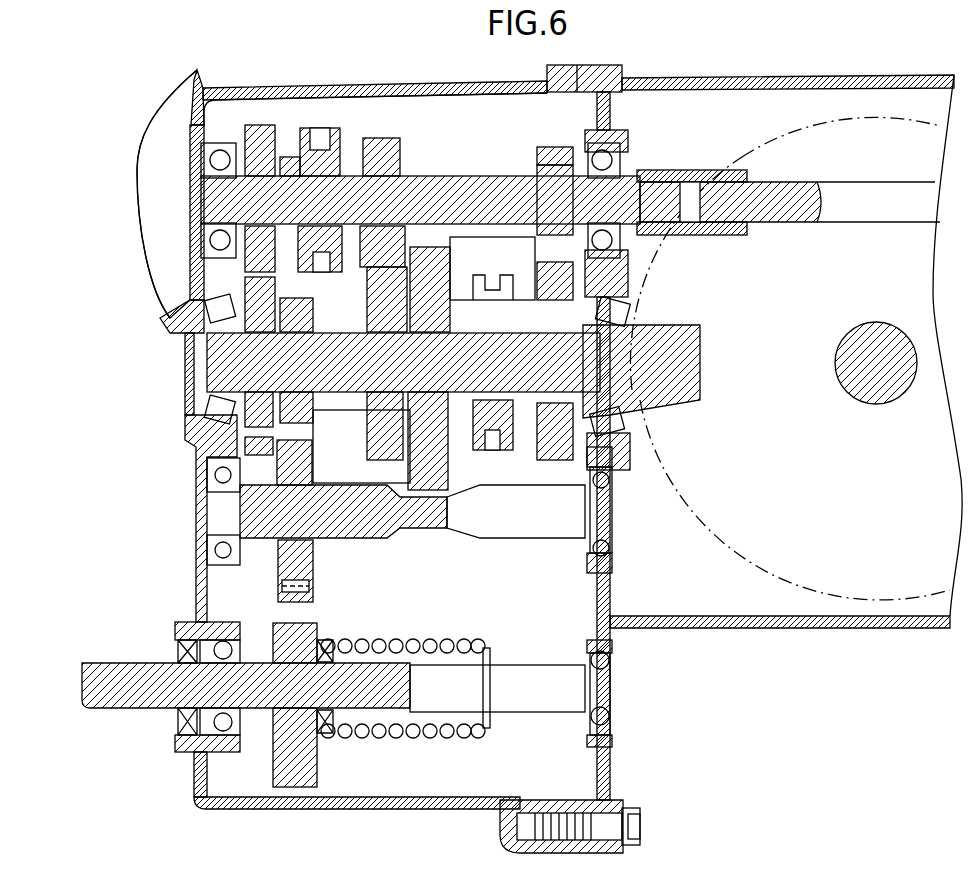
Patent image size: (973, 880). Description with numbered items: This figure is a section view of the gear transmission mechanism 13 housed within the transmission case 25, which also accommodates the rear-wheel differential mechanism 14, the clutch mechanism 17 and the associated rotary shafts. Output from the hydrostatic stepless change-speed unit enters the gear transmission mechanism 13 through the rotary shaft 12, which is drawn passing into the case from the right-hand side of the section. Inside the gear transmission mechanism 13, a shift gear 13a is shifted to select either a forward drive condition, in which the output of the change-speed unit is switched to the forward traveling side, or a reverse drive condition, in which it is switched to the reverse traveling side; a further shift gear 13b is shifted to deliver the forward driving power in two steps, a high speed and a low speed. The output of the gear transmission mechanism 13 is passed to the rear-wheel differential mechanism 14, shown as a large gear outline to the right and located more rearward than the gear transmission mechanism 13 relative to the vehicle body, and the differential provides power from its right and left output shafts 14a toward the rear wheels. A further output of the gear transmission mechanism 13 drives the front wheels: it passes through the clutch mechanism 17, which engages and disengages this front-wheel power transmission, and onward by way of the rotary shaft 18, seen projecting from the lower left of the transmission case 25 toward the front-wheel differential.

The rotary shaft 12 is at (887, 222).
The gear transmission mechanism 13 is at (545, 601).
The shift gear 13a is at (507, 447).
The further shift gear 13b is at (343, 132).
The rear-wheel differential mechanism 14 is at (688, 515).
The output shaft 14a is at (874, 400).
The clutch mechanism 17 is at (322, 580).
The rotary shaft 18 is at (120, 673).
The transmission case 25 is at (183, 433).